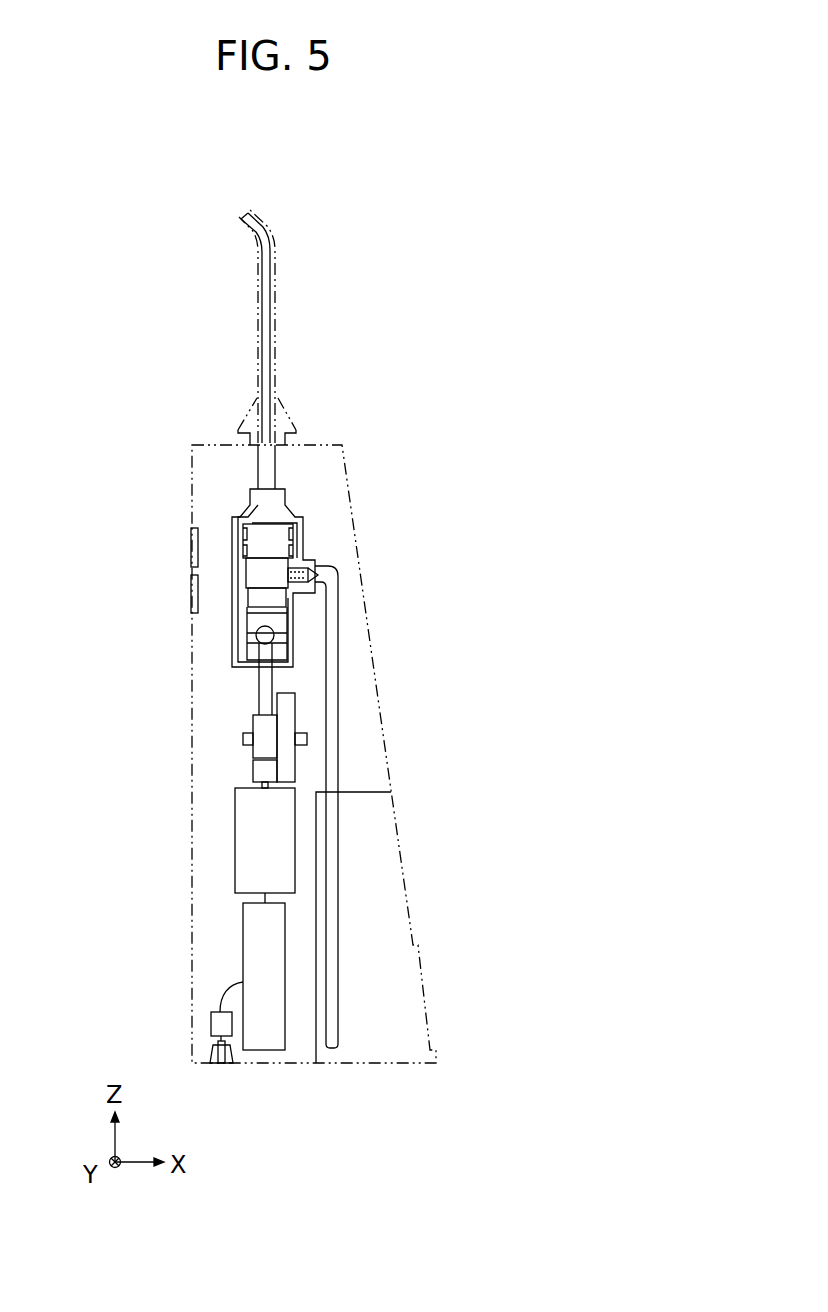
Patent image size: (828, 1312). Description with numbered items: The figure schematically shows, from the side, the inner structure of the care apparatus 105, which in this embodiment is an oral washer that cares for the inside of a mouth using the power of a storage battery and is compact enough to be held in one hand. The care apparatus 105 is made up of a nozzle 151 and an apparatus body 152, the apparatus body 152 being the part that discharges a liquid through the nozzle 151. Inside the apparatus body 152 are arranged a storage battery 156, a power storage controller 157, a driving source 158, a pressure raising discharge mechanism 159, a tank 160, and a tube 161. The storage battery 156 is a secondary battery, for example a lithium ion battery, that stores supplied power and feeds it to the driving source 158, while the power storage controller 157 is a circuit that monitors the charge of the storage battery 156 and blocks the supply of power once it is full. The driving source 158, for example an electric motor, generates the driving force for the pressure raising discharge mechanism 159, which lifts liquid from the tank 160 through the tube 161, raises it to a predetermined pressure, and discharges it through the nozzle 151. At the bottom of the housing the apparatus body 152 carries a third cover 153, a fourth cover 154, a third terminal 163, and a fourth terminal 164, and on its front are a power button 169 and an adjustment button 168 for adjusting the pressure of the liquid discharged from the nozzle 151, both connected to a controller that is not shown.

The care apparatus 105 is at (422, 209).
The nozzle 151 is at (277, 323).
The apparatus body 152 is at (357, 568).
The third cover 153 is at (144, 1046).
The fourth cover 154 is at (213, 1056).
The storage battery 156 is at (257, 928).
The power storage controller 157 is at (222, 1022).
The driving source 158 is at (253, 845).
The pressure raising discharge mechanism 159 is at (302, 538).
The tank 160 is at (382, 855).
The tube 161 is at (332, 703).
The third terminal 163 is at (254, 1093).
The fourth terminal 164 is at (221, 1063).
The adjustment button 168 is at (190, 592).
The power button 169 is at (190, 545).